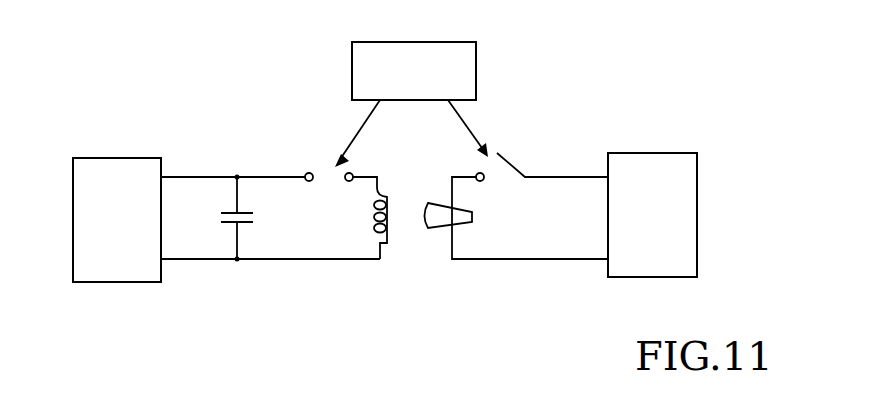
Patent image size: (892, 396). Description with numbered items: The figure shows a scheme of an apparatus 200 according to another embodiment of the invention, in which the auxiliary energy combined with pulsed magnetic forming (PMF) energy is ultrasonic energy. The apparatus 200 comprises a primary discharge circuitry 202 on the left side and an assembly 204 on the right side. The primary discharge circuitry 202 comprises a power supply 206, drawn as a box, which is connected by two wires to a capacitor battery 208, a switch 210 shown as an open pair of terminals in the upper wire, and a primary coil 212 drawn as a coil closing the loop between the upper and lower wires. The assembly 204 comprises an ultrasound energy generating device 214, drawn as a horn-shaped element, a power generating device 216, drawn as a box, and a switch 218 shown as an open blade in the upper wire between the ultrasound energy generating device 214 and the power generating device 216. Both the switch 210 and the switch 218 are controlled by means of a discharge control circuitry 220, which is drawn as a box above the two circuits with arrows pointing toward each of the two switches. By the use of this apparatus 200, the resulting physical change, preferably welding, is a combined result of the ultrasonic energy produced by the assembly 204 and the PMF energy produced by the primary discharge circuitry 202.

The apparatus 200 is at (633, 86).
The primary discharge circuitry 202 is at (274, 211).
The assembly 204 is at (515, 210).
The power supply 206 is at (120, 160).
The capacitor battery 208 is at (220, 217).
The switch 210 is at (327, 178).
The primary coil 212 is at (377, 227).
The ultrasound energy generating device 214 is at (428, 223).
The power generating device 216 is at (697, 183).
The switch 218 is at (505, 157).
The discharge control circuitry 220 is at (455, 42).